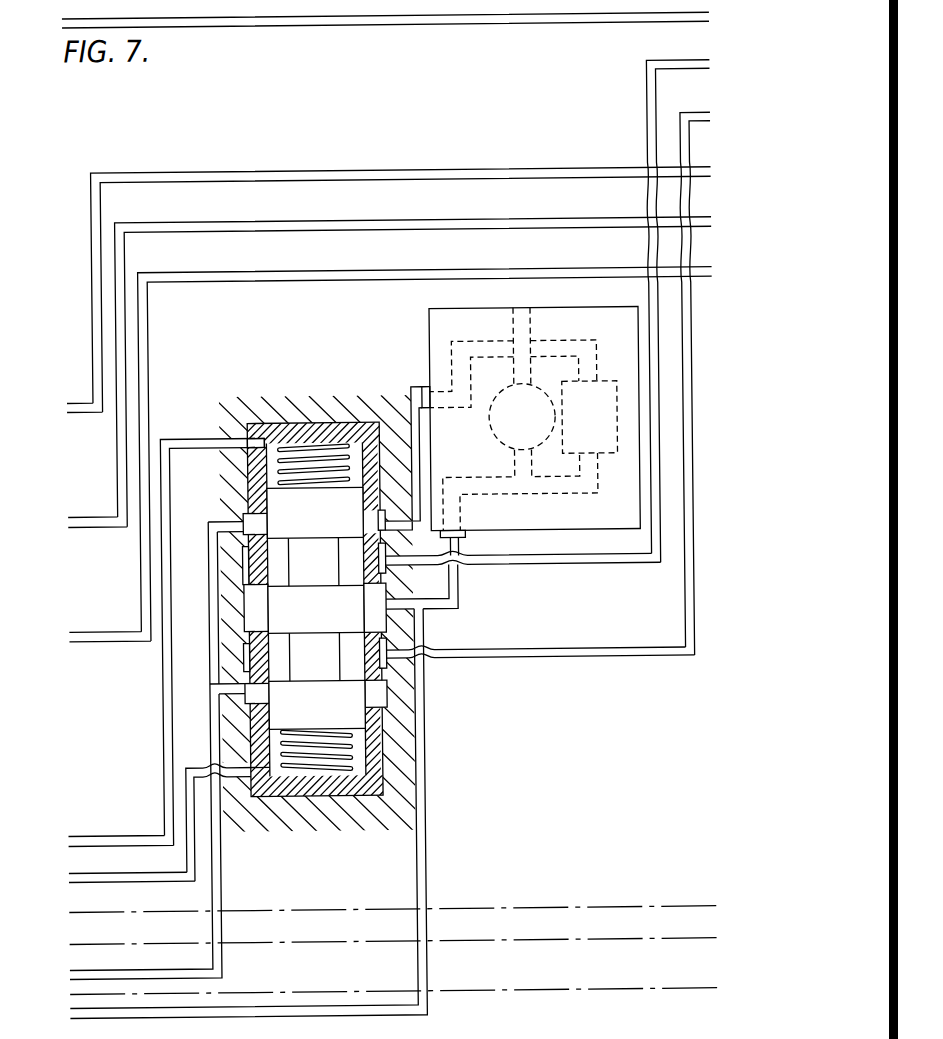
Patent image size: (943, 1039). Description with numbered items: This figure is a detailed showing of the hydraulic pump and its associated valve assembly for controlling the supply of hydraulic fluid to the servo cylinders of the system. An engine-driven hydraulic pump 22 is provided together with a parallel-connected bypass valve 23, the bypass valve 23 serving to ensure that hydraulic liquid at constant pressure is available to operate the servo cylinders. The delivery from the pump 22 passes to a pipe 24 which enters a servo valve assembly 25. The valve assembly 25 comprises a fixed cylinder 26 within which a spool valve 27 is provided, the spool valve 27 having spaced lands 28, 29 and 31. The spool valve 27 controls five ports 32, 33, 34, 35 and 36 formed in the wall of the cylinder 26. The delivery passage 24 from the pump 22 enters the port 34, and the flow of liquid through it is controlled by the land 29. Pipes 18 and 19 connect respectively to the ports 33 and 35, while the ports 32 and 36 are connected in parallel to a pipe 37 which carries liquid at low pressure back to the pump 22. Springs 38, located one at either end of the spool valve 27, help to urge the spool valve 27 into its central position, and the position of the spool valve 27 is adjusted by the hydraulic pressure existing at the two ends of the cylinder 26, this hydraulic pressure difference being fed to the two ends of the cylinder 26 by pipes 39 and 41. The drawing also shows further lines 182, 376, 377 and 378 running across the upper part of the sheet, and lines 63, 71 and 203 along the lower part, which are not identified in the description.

The housing wall line 182 is at (332, 21).
The conduit 376 is at (137, 175).
The conduit 377 is at (620, 222).
The conduit 378 is at (616, 275).
The pipe 19 is at (654, 92).
The pipe 18 is at (686, 136).
The pipe 37 is at (413, 430).
The hydraulic pump 22 is at (502, 443).
The bypass valve 23 is at (603, 445).
The pipe 24 is at (455, 580).
The port 36 is at (242, 516).
The spring 38 is at (280, 475).
The land 28 is at (353, 521).
The port 35 is at (368, 560).
The port 34 is at (260, 608).
The land 29 is at (357, 620).
The port 33 is at (363, 653).
The port 32 is at (212, 683).
The land 31 is at (345, 716).
The fixed cylinder 26 is at (377, 742).
The spool valve 27 is at (323, 735).
The servo valve assembly 25 is at (332, 816).
The pipe 39 is at (97, 840).
The pipe 41 is at (87, 874).
The axis line 71 is at (142, 939).
The conduit 63 is at (318, 1009).
The axis line 203 is at (372, 992).